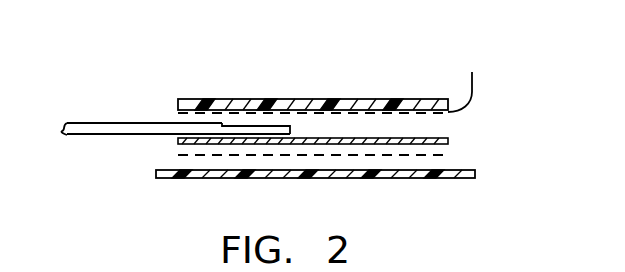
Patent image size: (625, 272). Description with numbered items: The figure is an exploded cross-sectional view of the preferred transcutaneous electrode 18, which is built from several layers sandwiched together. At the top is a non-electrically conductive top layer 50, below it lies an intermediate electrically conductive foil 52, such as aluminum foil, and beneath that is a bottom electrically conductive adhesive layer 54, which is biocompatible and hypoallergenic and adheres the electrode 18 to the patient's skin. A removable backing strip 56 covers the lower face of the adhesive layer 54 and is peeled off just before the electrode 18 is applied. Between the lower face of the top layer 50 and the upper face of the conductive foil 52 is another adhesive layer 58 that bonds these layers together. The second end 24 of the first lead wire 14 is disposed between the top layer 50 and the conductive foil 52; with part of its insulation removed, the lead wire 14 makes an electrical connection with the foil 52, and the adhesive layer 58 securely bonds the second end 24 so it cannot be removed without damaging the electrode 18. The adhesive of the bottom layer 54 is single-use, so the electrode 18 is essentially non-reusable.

The first lead wire 14 is at (93, 123).
The transcutaneous electrode 18 is at (514, 78).
The second end 24 is at (247, 130).
The top layer 50 is at (368, 103).
The intermediate electrically conductive foil 52 is at (448, 140).
The bottom electrically conductive adhesive layer 54 is at (450, 154).
The removable backing strip 56 is at (447, 178).
The adhesive layer 58 is at (466, 73).